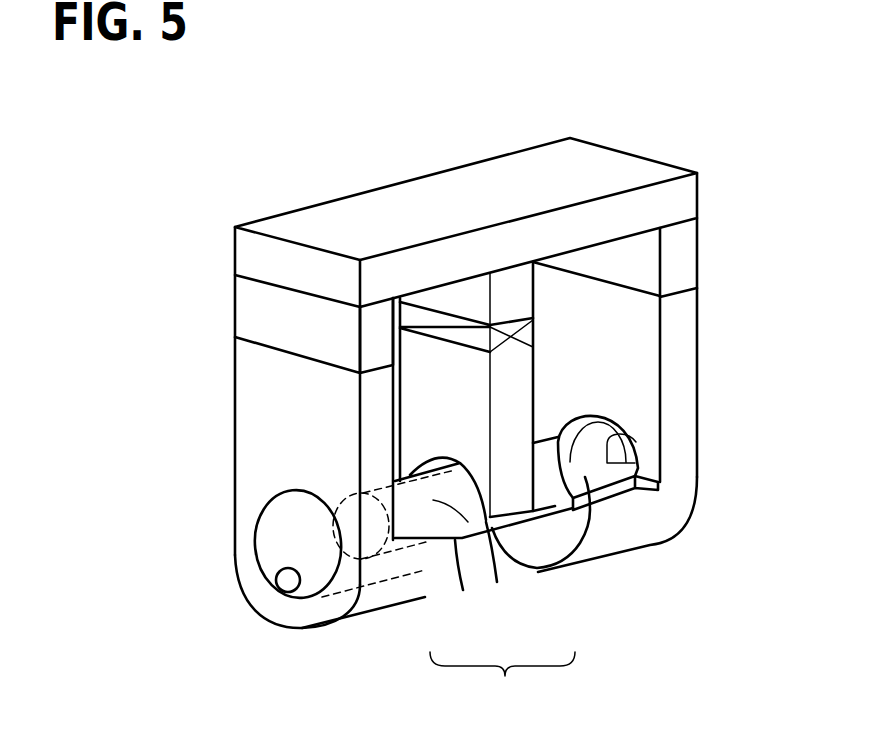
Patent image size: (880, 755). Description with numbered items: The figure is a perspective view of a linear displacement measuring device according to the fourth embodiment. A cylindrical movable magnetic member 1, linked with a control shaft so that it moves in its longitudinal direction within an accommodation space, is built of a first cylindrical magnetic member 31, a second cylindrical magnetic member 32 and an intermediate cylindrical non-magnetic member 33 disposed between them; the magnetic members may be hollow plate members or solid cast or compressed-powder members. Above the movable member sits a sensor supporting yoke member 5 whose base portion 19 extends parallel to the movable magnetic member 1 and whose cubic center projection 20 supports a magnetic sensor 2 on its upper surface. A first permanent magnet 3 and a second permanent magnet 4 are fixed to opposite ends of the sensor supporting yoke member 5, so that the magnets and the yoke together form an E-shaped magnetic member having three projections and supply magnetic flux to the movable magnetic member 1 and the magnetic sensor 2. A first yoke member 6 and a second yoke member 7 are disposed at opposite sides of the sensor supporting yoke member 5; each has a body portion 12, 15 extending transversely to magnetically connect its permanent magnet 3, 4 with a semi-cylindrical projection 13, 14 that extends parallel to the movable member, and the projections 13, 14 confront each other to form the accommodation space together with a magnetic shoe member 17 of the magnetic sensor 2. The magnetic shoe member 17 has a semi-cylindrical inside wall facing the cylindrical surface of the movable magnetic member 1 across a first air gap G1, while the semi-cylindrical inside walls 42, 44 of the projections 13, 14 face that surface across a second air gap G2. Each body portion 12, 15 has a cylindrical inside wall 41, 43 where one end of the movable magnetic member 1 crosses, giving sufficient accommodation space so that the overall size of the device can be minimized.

The cylindrical movable magnetic member 1 is at (502, 684).
The magnetic sensor 2 is at (437, 347).
The first permanent magnet 3 is at (295, 330).
The second permanent magnet 4 is at (703, 262).
The sensor supporting yoke member 5 is at (466, 209).
The first yoke member 6 is at (279, 531).
The second yoke member 7 is at (701, 350).
The body portion 12 is at (267, 430).
The semi-cylindrical projection 13 is at (337, 584).
The semi-cylindrical projection 14 is at (628, 531).
The body portion 15 is at (663, 336).
The magnetic shoe member 17 is at (640, 301).
The base portion 19 is at (466, 180).
The center projection 20 is at (466, 232).
The first cylindrical magnetic member 31 is at (484, 560).
The second cylindrical magnetic member 32 is at (513, 598).
The intermediate cylindrical non-magnetic member 33 is at (522, 569).
The cylindrical inside wall 41 is at (282, 625).
The semi-cylindrical inside wall 42 is at (388, 573).
The cylindrical inside wall 43 is at (660, 467).
The semi-cylindrical inside wall 44 is at (615, 544).
The first air gap G1 is at (439, 430).
The second air gap G2 is at (556, 442).